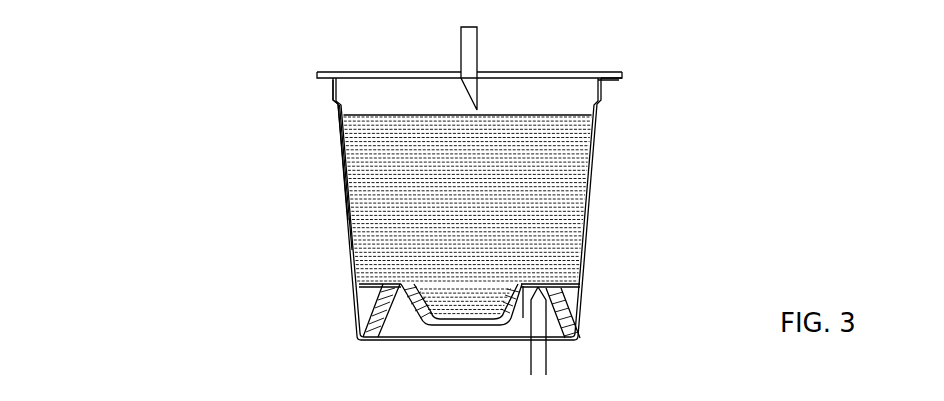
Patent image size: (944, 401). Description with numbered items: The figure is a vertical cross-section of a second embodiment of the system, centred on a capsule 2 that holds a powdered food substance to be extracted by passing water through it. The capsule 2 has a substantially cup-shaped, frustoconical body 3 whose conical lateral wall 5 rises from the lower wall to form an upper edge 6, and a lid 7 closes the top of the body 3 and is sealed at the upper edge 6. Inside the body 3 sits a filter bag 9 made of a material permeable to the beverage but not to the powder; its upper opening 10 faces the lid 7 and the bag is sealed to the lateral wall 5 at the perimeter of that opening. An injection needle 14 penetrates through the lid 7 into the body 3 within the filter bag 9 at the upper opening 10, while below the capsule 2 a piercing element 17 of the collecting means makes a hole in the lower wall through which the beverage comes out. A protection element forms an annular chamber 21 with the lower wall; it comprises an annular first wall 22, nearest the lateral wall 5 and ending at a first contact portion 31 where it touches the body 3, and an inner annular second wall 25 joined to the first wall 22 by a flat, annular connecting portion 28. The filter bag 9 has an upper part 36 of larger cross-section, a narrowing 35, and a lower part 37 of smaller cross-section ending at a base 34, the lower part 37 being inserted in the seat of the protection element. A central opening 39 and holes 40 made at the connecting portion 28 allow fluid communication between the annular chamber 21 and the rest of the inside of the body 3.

The capsule 2 is at (708, 138).
The body 3 is at (357, 98).
The lateral wall 5 is at (343, 175).
The upper edge 6 is at (622, 78).
The lid 7 is at (382, 77).
The filter bag 9 is at (530, 216).
The upper opening 10 is at (513, 115).
The injection needle 14 is at (461, 58).
The piercing element 17 is at (546, 365).
The annular chamber 21 is at (392, 322).
The first wall 22 is at (380, 308).
The second wall 25 is at (413, 307).
The connecting portion 28 is at (388, 287).
The first contact portion 31 is at (570, 348).
The base 34 is at (470, 326).
The narrowing 35 is at (568, 283).
The upper part 36 is at (384, 148).
The lower part 37 is at (480, 295).
The central opening 39 is at (450, 333).
The holes 40 is at (397, 283).